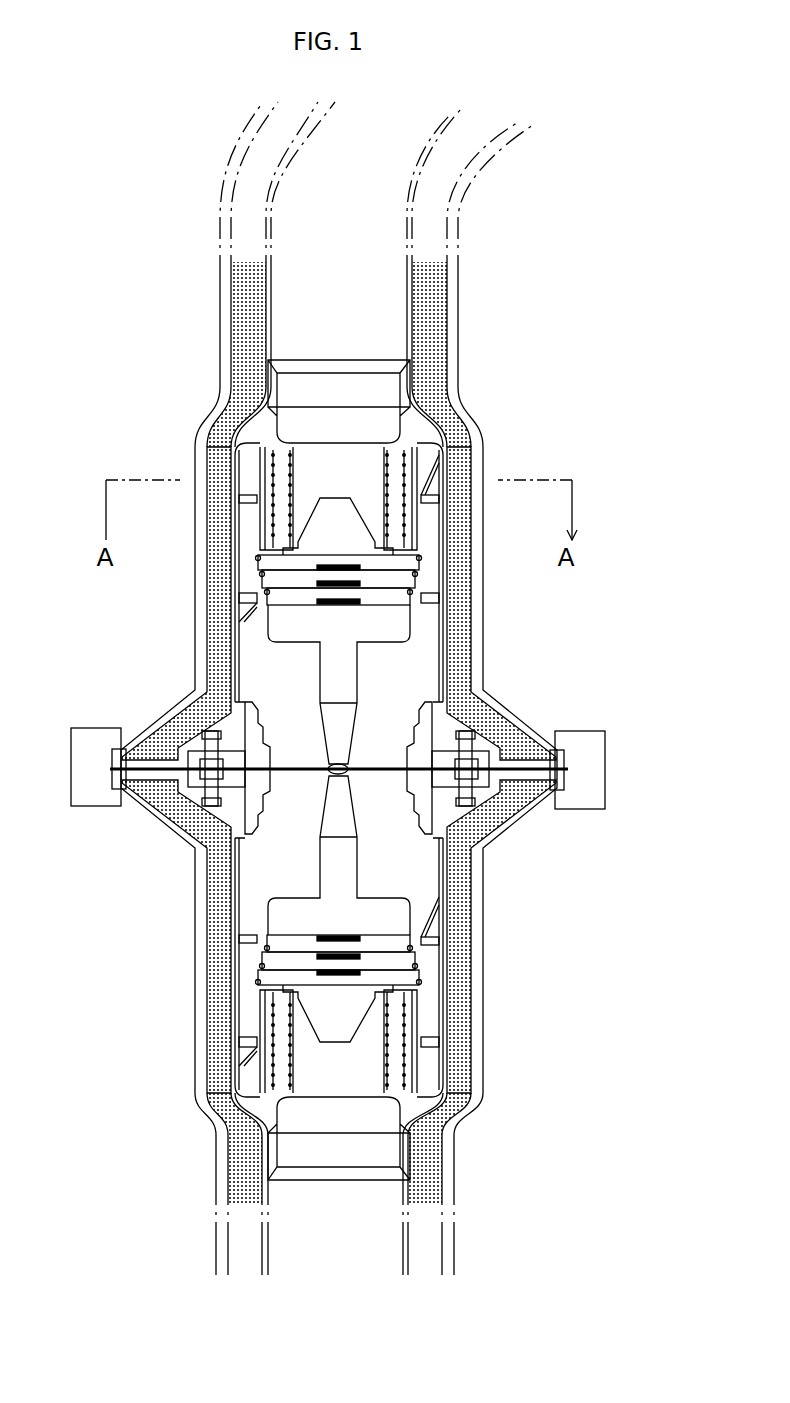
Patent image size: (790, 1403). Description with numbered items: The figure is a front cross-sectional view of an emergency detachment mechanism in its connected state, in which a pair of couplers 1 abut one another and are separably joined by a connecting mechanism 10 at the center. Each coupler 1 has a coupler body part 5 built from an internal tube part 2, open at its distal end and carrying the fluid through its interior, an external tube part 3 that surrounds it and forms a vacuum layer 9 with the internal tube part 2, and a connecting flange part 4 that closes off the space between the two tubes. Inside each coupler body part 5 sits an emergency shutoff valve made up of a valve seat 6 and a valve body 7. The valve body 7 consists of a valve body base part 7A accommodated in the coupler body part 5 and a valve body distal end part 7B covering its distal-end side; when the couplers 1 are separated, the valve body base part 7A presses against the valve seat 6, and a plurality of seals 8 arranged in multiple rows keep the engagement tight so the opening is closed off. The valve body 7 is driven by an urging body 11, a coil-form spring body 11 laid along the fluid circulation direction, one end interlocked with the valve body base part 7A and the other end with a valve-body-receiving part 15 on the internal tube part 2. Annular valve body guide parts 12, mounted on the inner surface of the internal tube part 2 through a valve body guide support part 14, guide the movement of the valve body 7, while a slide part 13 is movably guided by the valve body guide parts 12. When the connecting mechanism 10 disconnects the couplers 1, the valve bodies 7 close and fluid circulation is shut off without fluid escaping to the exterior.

The coupler 1 is at (192, 605).
The internal tube part 2 is at (470, 478).
The external tube part 3 is at (478, 524).
The connecting flange part 4 is at (550, 850).
The coupler body part 5 is at (485, 628).
The valve seat 6 is at (405, 748).
The valve body 7 is at (260, 630).
The valve body base part 7A is at (257, 573).
The valve body distal end part 7B is at (285, 645).
The seals 8 is at (407, 598).
The vacuum layer 9 is at (457, 688).
The connecting mechanism 10 is at (606, 745).
The urging body 11 is at (292, 485).
The valve body guide parts 12 is at (422, 493).
The slide part 13 is at (258, 476).
The valve body guide support part 14 is at (447, 500).
The valve-body-receiving part 15 is at (392, 436).